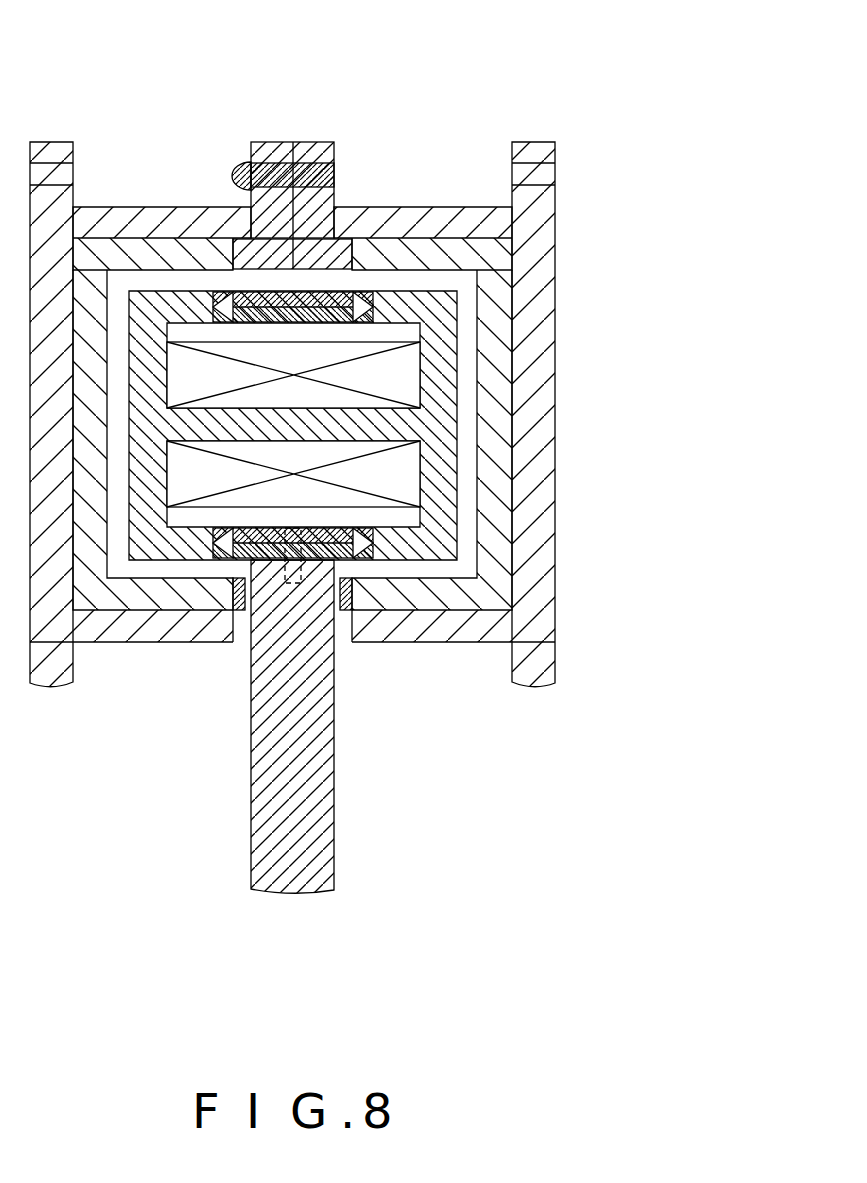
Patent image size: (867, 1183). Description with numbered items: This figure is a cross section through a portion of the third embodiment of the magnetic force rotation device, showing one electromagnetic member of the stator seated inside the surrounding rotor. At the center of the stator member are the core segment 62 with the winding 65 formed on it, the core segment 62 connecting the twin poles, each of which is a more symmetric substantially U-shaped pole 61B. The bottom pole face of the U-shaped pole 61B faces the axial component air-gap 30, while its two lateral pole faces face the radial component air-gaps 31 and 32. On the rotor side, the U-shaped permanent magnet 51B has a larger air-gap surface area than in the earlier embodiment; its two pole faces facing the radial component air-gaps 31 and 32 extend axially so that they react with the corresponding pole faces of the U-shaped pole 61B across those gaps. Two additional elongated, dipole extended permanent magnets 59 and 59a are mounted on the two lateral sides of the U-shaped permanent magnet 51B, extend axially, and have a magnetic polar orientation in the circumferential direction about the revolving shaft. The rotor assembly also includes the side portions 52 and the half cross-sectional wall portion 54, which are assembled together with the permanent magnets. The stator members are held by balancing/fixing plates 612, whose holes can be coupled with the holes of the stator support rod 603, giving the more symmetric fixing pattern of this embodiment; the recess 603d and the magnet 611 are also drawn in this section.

The axial component air-gap 30 is at (467, 337).
The radial component air-gap 31 is at (407, 280).
The radial component air-gap 32 is at (398, 567).
The U-shaped permanent magnet 51B is at (493, 402).
The side portion 52 is at (538, 457).
The half cross-sectional wall portion 54 is at (395, 226).
The extended permanent magnet 59 is at (333, 245).
The extended permanent magnet 59a is at (350, 610).
The U-shaped pole 61B is at (440, 305).
The core segment 62 is at (235, 427).
The winding 65 is at (180, 375).
The stator support rod 603 is at (280, 752).
The shaft recess 603d is at (300, 590).
The upper magnet 611 is at (240, 298).
The balancing/fixing plate 612 is at (242, 612).